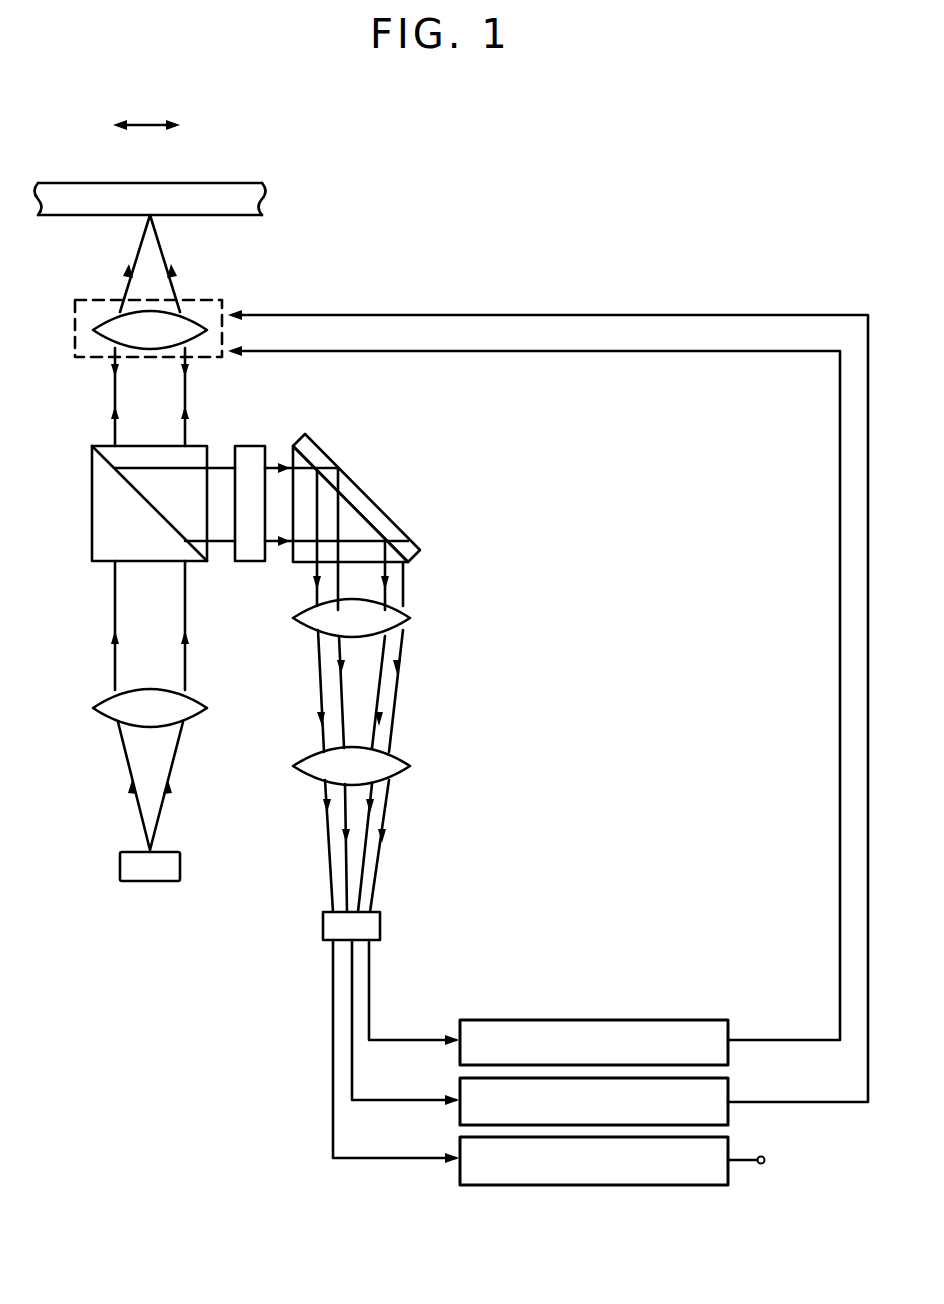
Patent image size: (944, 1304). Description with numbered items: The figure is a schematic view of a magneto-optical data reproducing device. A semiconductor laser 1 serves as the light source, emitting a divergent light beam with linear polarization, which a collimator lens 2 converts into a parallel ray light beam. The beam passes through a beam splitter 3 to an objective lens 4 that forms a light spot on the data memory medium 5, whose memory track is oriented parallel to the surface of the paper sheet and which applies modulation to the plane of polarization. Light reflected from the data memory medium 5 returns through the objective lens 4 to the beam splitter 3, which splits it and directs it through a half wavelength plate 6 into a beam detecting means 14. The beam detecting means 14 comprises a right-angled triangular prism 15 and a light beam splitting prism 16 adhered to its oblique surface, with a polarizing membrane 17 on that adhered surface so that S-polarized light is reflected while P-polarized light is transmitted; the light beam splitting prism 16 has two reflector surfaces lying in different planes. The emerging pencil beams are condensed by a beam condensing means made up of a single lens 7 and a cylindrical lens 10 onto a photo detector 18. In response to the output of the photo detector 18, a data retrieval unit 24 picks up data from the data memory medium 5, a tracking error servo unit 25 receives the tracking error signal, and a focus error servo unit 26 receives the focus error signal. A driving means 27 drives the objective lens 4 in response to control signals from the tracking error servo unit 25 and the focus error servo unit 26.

The semiconductor laser 1 is at (142, 872).
The collimator lens 2 is at (110, 705).
The beam splitter 3 is at (97, 480).
The objective lens 4 is at (110, 327).
The data memory medium 5 is at (242, 191).
The half wavelength plate 6 is at (250, 452).
The single lens 7 is at (390, 618).
The cylindrical lens 10 is at (388, 767).
The beam detecting means 14 is at (385, 489).
The right-angled triangular prism 15 is at (316, 452).
The light beam splitting prism 16 is at (352, 496).
The polarizing membrane 17 is at (362, 517).
The photo detector 18 is at (372, 928).
The data retrieval unit 24 is at (612, 1161).
The tracking error servo unit 25 is at (594, 1101).
The focus error servo unit 26 is at (594, 1042).
The driving means 27 is at (214, 300).